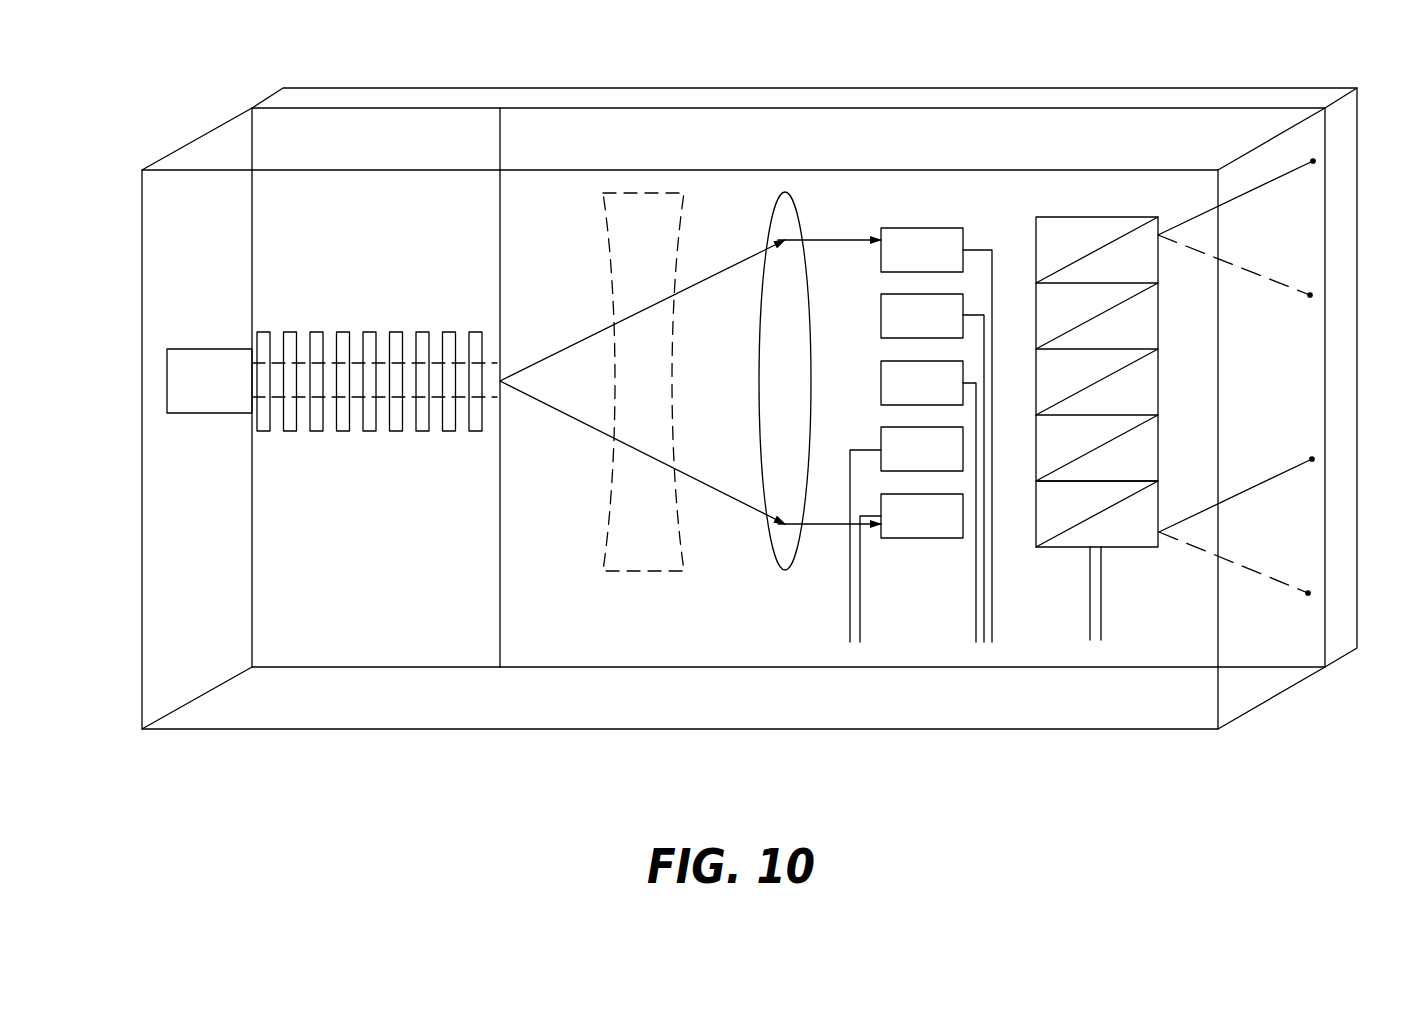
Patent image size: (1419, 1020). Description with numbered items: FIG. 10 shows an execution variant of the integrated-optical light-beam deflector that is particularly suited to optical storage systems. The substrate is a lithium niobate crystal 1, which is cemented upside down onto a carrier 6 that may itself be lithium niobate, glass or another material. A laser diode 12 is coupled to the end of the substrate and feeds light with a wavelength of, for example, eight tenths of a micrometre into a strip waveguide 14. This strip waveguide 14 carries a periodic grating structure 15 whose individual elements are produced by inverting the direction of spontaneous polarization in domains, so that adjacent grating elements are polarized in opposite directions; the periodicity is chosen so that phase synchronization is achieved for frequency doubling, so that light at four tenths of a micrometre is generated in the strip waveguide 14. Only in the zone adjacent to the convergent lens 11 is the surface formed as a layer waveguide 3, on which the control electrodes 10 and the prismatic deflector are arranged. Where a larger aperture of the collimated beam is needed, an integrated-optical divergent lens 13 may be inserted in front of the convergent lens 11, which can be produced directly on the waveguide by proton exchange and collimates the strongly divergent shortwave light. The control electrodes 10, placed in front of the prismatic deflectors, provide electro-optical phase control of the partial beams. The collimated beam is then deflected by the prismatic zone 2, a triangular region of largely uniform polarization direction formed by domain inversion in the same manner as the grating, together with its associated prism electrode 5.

The lithium niobate crystal 1 is at (1345, 398).
The prismatic zone 2 is at (1045, 513).
The layer waveguide 3 is at (1327, 327).
The prism electrode 5 is at (1132, 533).
The carrier 6 is at (180, 568).
The control electrodes 10 is at (900, 230).
The convergent lens 11 is at (784, 556).
The laser diode 12 is at (172, 388).
The diverging lens 13 is at (637, 195).
The strip waveguide 14 is at (382, 398).
The periodic grating structure 15 is at (343, 332).